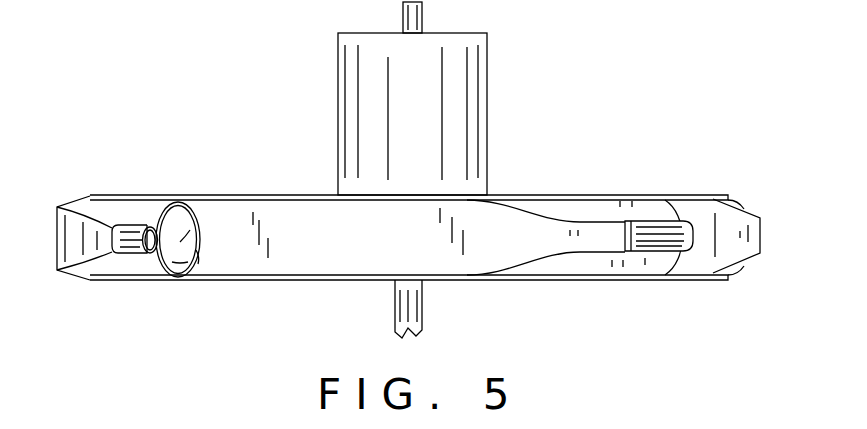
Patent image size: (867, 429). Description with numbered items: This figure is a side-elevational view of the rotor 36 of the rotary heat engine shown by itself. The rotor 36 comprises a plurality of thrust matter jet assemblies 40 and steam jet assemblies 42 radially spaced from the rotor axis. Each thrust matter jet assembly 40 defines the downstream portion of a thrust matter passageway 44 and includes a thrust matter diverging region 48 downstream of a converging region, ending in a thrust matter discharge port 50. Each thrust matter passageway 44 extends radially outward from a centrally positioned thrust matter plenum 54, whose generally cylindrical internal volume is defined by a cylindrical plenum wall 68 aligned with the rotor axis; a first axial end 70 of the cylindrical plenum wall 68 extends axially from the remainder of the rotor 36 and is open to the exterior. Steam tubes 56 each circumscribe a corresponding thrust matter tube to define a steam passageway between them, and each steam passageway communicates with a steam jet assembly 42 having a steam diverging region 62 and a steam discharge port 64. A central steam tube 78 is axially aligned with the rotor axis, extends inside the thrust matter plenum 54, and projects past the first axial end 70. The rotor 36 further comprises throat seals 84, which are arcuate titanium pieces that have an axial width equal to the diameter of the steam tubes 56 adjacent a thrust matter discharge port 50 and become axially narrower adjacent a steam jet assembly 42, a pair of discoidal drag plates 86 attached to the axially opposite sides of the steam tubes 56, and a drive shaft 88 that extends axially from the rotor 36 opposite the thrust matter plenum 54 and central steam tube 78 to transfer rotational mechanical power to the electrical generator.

The rotor 36 is at (569, 95).
The thrust matter jet assembly 40 is at (182, 225).
The steam jet assembly 42 is at (130, 240).
The thrust matter passageway 44 is at (180, 263).
The thrust matter diverging region 48 is at (180, 242).
The thrust matter discharge port 50 is at (200, 257).
The thrust matter plenum 54 is at (460, 127).
The steam tube 56 is at (97, 212).
The steam diverging region 62 is at (152, 253).
The steam discharge port 64 is at (147, 253).
The cylindrical plenum wall 68 is at (468, 82).
The first axial end 70 is at (358, 34).
The central steam tube 78 is at (403, 15).
The throat seal 84 is at (57, 253).
The drag plate 86 is at (541, 195).
The drive shaft 88 is at (405, 310).